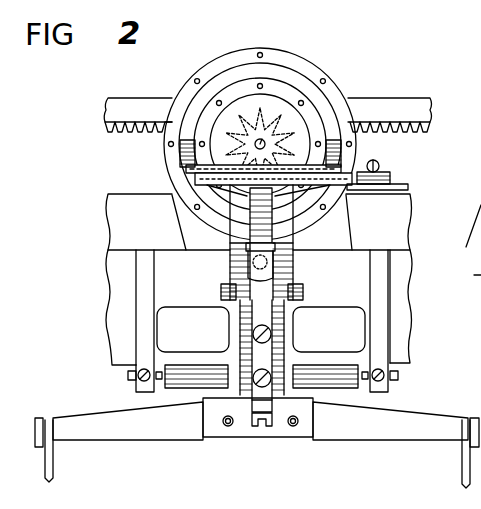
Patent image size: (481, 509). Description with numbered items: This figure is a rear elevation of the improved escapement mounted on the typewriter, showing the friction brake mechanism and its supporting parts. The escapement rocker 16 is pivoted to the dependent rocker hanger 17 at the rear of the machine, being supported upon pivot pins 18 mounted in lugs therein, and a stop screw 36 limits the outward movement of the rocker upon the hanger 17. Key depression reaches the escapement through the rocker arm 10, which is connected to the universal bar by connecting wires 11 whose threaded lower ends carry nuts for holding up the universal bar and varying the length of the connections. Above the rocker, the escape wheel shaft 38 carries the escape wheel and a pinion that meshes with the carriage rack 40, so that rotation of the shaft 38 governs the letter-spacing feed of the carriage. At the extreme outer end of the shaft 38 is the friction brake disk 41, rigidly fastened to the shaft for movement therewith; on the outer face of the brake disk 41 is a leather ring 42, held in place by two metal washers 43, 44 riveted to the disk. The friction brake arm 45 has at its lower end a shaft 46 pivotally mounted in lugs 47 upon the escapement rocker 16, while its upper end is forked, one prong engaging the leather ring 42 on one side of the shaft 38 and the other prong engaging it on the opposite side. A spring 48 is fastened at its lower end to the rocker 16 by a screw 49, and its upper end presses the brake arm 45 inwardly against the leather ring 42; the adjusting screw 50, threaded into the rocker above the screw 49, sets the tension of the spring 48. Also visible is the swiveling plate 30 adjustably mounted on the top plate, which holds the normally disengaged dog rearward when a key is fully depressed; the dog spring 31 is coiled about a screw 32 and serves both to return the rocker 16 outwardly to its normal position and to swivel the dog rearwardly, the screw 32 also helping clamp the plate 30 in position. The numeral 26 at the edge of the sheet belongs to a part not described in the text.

The rocker arm 10 is at (395, 434).
The connecting wires 11 is at (54, 466).
The escapement rocker 16 is at (290, 436).
The rocker hanger 17 is at (118, 312).
The pivot pins 18 is at (130, 378).
The adjacent figure part 26 is at (469, 244).
The swiveling plate 30 is at (402, 190).
The dog spring 31 is at (356, 178).
The screw 32 is at (380, 170).
The stop screw 36 is at (268, 416).
The escape wheel shaft 38 is at (258, 140).
The carriage rack 40 is at (402, 101).
The friction brake disk 41 is at (283, 62).
The leather ring 42 is at (310, 85).
The metal washer 43 is at (266, 50).
The metal washer 44 is at (210, 113).
The friction brake arm 45 is at (186, 170).
The shaft 46 is at (288, 282).
The lugs 47 is at (224, 292).
The spring 48 is at (258, 350).
The screw 49 is at (262, 398).
The adjusting screw 50 is at (274, 336).